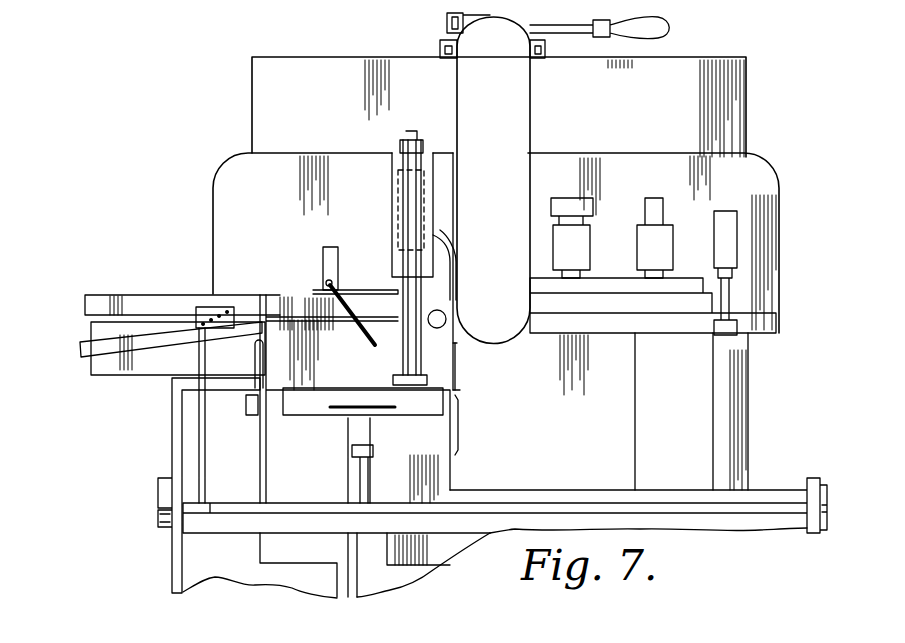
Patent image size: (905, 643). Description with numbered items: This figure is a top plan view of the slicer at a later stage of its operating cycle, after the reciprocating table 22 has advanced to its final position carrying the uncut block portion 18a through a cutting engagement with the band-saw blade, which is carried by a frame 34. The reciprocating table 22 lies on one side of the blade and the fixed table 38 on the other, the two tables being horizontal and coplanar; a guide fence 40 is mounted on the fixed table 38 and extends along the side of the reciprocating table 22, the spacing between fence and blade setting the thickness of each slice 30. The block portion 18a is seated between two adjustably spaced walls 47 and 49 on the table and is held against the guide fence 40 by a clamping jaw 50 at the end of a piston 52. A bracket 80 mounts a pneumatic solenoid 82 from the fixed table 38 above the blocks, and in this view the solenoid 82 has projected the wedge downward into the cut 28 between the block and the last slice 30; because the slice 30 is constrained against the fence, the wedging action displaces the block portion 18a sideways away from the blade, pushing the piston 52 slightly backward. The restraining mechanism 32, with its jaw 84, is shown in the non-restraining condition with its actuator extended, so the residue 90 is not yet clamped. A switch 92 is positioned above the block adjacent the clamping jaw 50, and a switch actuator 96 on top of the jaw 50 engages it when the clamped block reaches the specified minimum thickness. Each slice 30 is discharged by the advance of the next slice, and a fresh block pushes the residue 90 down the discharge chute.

The uncut block portion 18a is at (458, 360).
The reciprocating table 22 is at (323, 482).
The cut 28 is at (322, 308).
The slice 30 is at (153, 292).
The restraining mechanism 32 is at (389, 192).
The frame 34 is at (525, 105).
The fixed table 38 is at (291, 207).
The guide fence 40 is at (383, 262).
The wall 47 is at (459, 418).
The wall 49 is at (256, 432).
The clamping jaw 50 is at (408, 410).
The piston 52 is at (372, 486).
The bracket 80 is at (446, 240).
The pneumatic solenoid 82 is at (446, 314).
The jaw 84 is at (430, 380).
The block residue 90 is at (78, 352).
The switch 92 is at (323, 282).
The switch actuator 96 is at (330, 405).